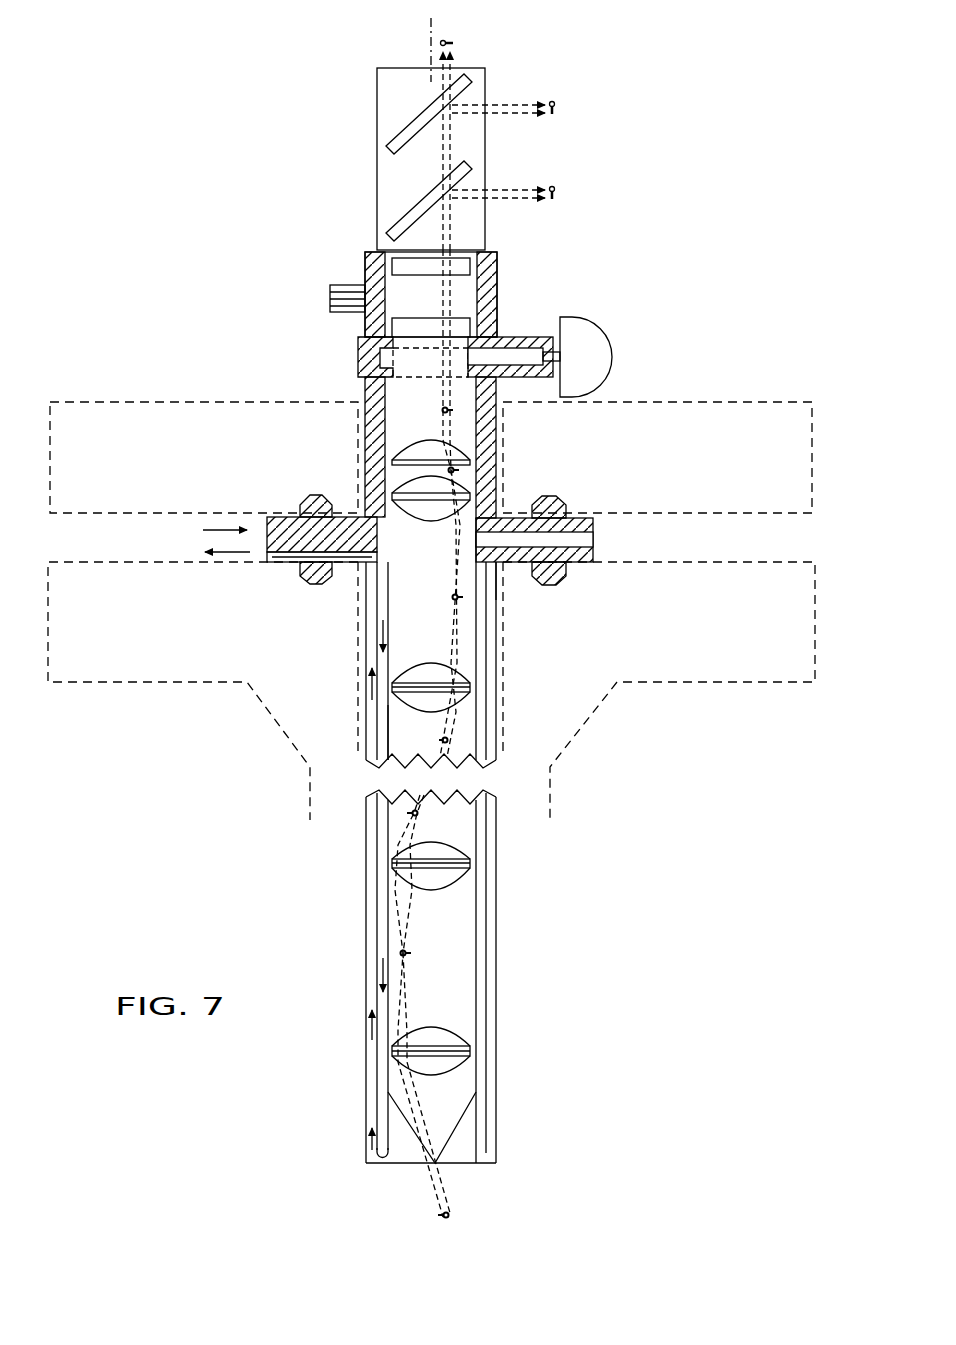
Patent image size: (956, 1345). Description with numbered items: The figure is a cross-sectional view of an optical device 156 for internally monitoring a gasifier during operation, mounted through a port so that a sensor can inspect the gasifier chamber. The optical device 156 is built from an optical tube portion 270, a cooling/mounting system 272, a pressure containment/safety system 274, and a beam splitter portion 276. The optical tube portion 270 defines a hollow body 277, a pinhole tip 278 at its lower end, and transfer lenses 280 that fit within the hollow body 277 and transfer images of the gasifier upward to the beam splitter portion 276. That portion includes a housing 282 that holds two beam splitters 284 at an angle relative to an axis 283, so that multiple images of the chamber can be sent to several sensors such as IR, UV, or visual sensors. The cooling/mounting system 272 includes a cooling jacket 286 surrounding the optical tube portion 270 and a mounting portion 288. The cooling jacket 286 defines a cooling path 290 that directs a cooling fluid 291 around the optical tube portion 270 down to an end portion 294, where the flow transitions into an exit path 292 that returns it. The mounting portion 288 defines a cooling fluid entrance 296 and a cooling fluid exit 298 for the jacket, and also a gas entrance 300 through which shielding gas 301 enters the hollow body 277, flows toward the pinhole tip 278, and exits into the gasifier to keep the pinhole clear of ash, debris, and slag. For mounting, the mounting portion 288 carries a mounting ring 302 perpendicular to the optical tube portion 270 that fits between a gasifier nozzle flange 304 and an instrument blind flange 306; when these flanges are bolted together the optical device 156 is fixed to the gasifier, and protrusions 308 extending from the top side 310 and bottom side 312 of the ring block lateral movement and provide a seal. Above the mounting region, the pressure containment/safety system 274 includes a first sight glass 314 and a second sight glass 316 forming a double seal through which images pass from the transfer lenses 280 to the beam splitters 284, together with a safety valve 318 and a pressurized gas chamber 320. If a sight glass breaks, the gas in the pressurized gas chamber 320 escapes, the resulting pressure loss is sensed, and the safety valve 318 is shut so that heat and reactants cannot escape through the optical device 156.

The optical device 156 is at (519, 1011).
The optical tube portion 270 is at (387, 733).
The cooling/mounting system 272 is at (342, 622).
The pressure containment/safety system 274 is at (539, 343).
The beam splitter portion 276 is at (407, 129).
The hollow body 277 is at (458, 988).
The pinhole tip 278 is at (460, 1193).
The transfer lenses 280 is at (392, 494).
The housing 282 is at (485, 78).
The axis 283 is at (431, 32).
The beam splitters 284 is at (393, 152).
The cooling jacket 286 is at (366, 885).
The mounting portion 288 is at (260, 518).
The cooling path 290 is at (480, 920).
The cooling fluid 291 is at (203, 530).
The exit path 292 is at (490, 1003).
The end portion 294 is at (490, 1163).
The cooling fluid entrance 296 is at (268, 525).
The cooling fluid exit 298 is at (268, 555).
The gas entrance 300 is at (593, 538).
The shielding gas 301 is at (432, 600).
The mounting ring 302 is at (580, 560).
The gasifier nozzle flange 304 is at (787, 655).
The instrument blind flange 306 is at (770, 420).
The protrusions 308 is at (305, 502).
The top side 310 is at (512, 513).
The bottom side 312 is at (510, 563).
The first sight glass 314 is at (392, 321).
The second sight glass 316 is at (396, 272).
The safety valve 318 is at (515, 355).
The pressurized gas chamber 320 is at (397, 300).